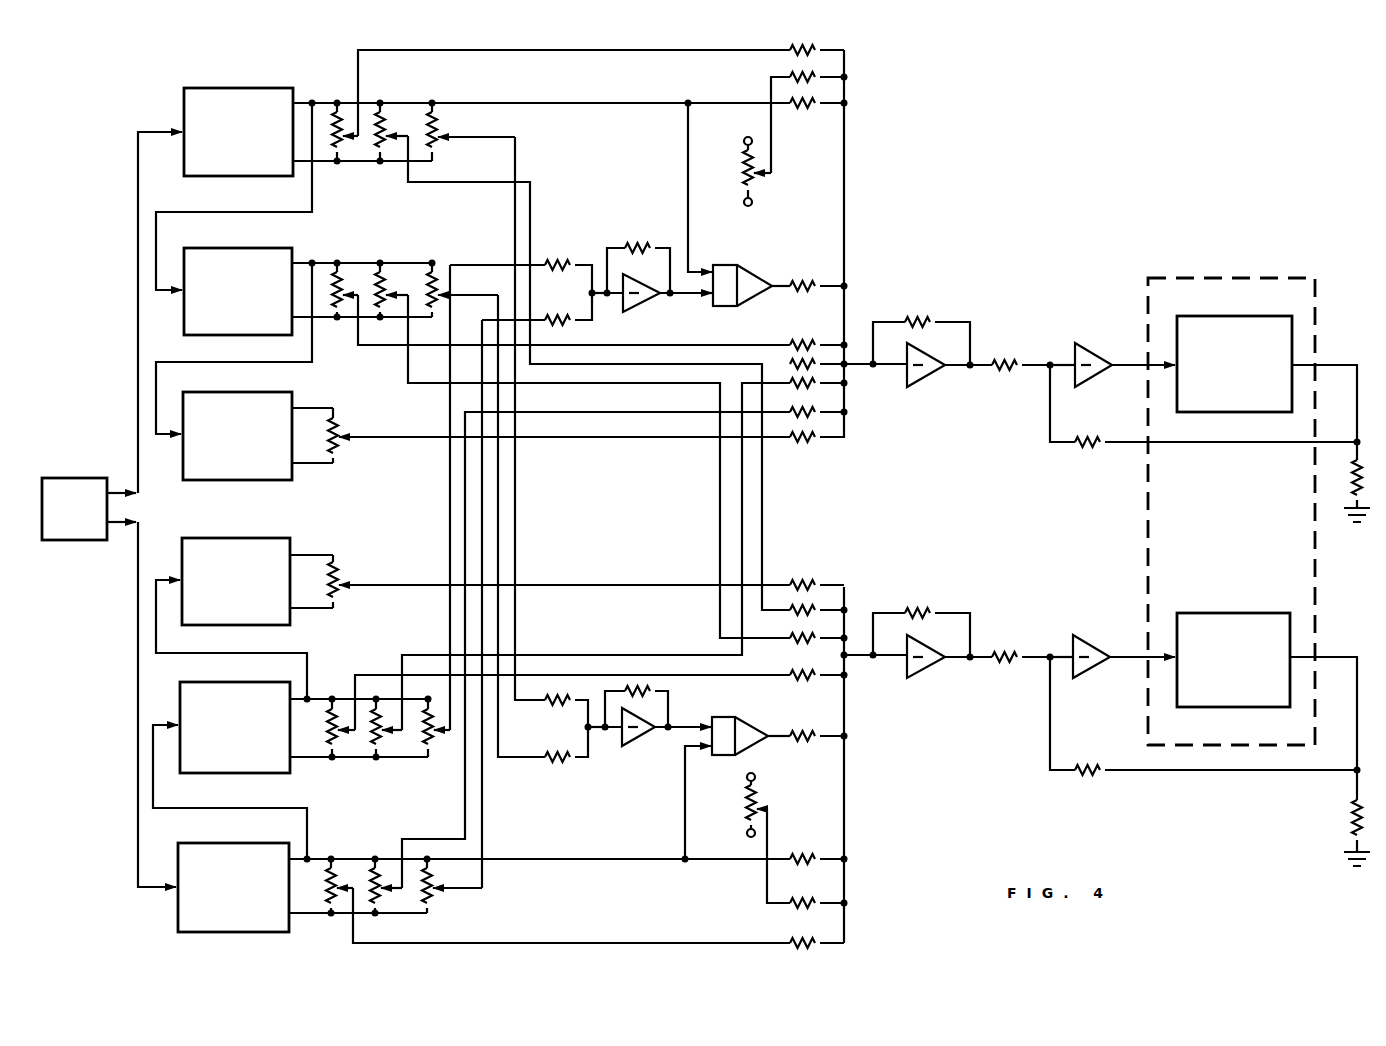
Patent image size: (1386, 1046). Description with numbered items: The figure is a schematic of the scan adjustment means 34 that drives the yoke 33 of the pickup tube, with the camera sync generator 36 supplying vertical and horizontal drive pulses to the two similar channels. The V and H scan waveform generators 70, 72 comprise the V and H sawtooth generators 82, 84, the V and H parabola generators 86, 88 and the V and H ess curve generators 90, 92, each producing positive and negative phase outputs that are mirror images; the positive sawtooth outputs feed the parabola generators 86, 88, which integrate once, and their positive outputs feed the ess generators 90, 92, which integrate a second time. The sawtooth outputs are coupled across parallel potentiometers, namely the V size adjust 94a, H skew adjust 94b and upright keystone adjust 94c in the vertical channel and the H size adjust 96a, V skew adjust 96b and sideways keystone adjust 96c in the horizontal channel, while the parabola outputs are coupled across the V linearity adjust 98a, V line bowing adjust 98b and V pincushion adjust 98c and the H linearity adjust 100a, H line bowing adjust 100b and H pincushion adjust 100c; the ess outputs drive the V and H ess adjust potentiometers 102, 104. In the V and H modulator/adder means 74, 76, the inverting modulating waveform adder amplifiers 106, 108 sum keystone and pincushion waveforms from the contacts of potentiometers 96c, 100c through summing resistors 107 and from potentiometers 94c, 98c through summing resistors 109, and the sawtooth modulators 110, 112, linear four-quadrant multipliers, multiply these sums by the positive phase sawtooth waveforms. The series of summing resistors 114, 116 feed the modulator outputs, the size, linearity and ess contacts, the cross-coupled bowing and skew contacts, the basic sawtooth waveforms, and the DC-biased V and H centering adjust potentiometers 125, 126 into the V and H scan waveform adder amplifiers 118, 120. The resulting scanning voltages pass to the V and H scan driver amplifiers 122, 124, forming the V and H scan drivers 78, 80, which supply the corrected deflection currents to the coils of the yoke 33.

The yoke 33 is at (1319, 575).
The scan adjustment means 34 is at (1016, 139).
The camera sync generator 36 is at (83, 476).
The V scan waveform generator 70 is at (205, 950).
The H scan waveform generator 72 is at (203, 68).
The V waveform modulator/adder means 74 is at (698, 764).
The H waveform modulator/adder means 76 is at (674, 243).
The V scan driver 78 is at (1084, 788).
The H scan driver 80 is at (1210, 368).
The V sawtooth generator 82 is at (248, 842).
The H sawtooth generator 84 is at (266, 86).
The V parabola generator 86 is at (256, 681).
The H parabola generator 88 is at (252, 247).
The V ess curve generator 90 is at (261, 537).
The H ess curve generator 92 is at (261, 391).
The V size adjust potentiometer 94a is at (336, 866).
The H skew adjust potentiometer 94b is at (380, 866).
The upright keystone adjust potentiometer 94c is at (437, 896).
The H size adjust potentiometer 96a is at (340, 110).
The V skew adjust potentiometer 96b is at (387, 128).
The sideways keystone adjust potentiometer 96c is at (439, 128).
The V linearity adjust potentiometer 98a is at (336, 752).
The V line bowing adjust potentiometer 98b is at (379, 752).
The V pincushion adjust potentiometer 98c is at (431, 752).
The H linearity adjust potentiometer 100a is at (341, 272).
The H line bowing adjust potentiometer 100b is at (387, 284).
The H pincushion adjust potentiometer 100c is at (438, 283).
The V ess adjust potentiometer 102 is at (345, 572).
The H ess adjust potentiometer 104 is at (345, 428).
The V modulating waveform adder amplifier 106 is at (641, 749).
The summing resistors 107 is at (556, 706).
The H modulating waveform adder amplifier 108 is at (646, 301).
The summing resistors 109 is at (559, 272).
The V sawtooth modulator 110 is at (751, 717).
The H sawtooth modulator 112 is at (763, 298).
The summing resistors 114 is at (824, 758).
The summing resistors 116 is at (831, 171).
The V scan waveform adder amplifier 118 is at (936, 666).
The H scan waveform adder amplifier 120 is at (929, 381).
The V scan driver amplifier 122 is at (1094, 644).
The H scan driver amplifier 124 is at (1094, 344).
The V centering adjust potentiometer 125 is at (747, 809).
The H centering adjust potentiometer 126 is at (744, 173).